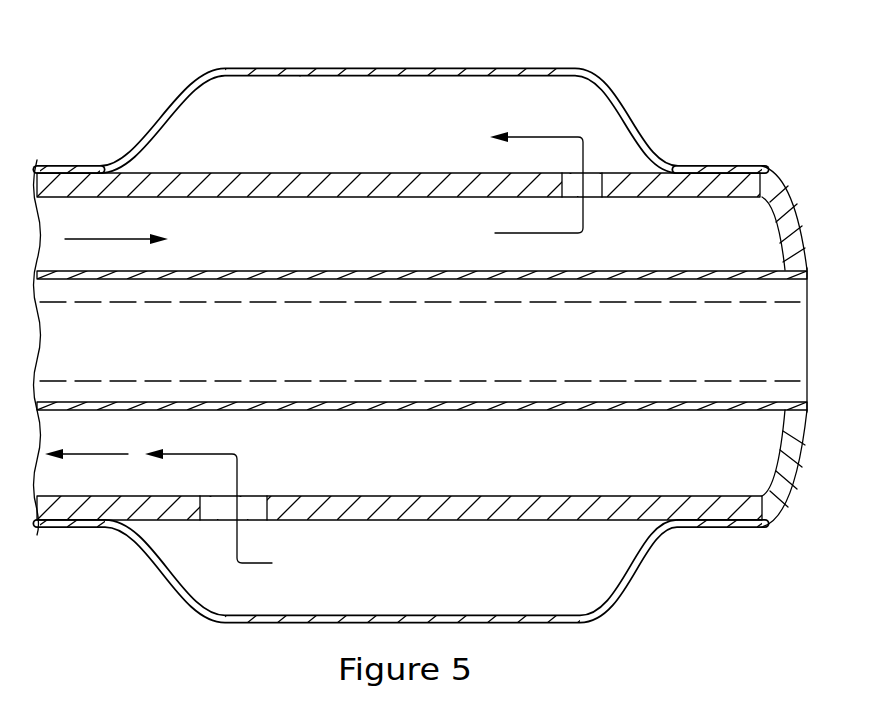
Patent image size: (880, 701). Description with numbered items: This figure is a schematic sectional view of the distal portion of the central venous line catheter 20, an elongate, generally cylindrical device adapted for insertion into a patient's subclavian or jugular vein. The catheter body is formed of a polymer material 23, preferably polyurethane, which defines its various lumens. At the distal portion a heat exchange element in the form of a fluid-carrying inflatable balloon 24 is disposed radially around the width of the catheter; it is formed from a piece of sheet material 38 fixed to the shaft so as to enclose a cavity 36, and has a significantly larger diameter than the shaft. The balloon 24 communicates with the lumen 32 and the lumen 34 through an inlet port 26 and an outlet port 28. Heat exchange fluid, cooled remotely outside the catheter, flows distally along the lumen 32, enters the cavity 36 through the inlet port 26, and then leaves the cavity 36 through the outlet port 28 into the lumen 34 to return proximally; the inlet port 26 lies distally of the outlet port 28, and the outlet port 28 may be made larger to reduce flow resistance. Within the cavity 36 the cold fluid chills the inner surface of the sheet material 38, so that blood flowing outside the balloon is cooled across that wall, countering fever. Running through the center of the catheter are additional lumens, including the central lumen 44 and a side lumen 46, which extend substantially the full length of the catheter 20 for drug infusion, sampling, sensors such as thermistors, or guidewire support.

The central venous line catheter 20 is at (90, 163).
The polymer material 23 is at (778, 183).
The inflatable balloon 24 is at (601, 65).
The inlet port 26 is at (592, 178).
The outlet port 28 is at (220, 515).
The lumen 32 is at (40, 182).
The lumen 34 is at (112, 487).
The cavity 36 is at (512, 88).
The sheet material 38 is at (650, 148).
The central lumen 44 is at (785, 392).
The side lumen 46 is at (785, 300).